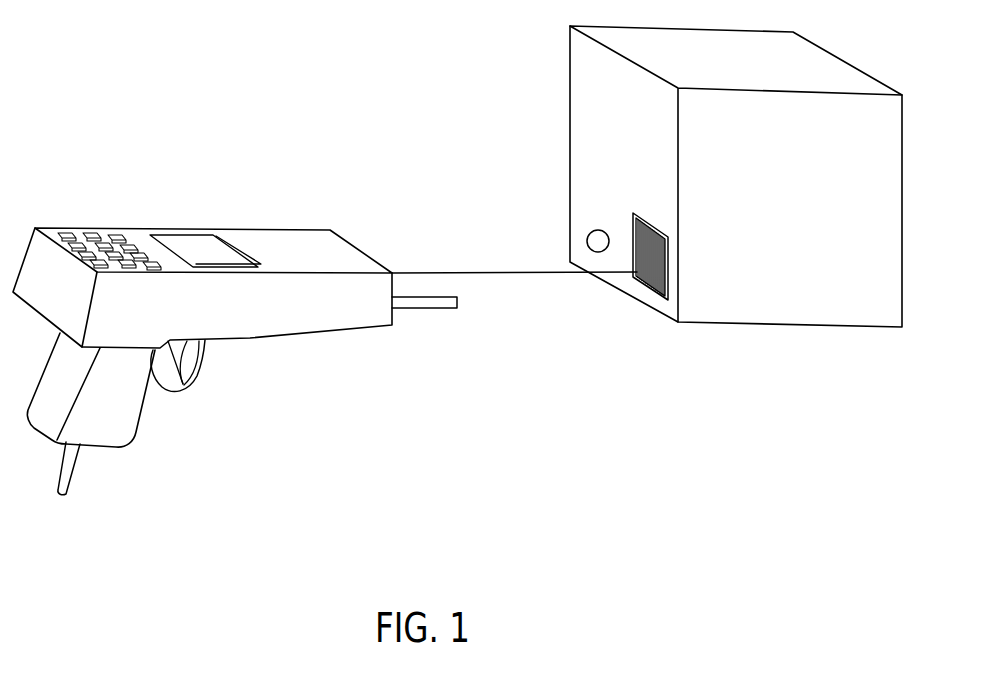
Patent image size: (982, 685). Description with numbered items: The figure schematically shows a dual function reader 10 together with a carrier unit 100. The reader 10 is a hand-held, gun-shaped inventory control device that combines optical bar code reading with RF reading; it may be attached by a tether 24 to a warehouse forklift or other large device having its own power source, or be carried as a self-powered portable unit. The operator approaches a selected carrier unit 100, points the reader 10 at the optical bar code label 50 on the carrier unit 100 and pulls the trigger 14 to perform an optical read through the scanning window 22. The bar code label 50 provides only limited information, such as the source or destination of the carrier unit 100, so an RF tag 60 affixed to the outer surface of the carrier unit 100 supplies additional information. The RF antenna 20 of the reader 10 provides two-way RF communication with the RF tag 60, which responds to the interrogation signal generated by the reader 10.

The dual function reader 10 is at (229, 229).
The trigger 14 is at (196, 383).
The RF antenna 20 is at (448, 309).
The scanning window 22 is at (358, 251).
The tether 24 is at (72, 487).
The optical bar code label 50 is at (653, 294).
The RF tag 60 is at (587, 242).
The carrier unit 100 is at (570, 148).